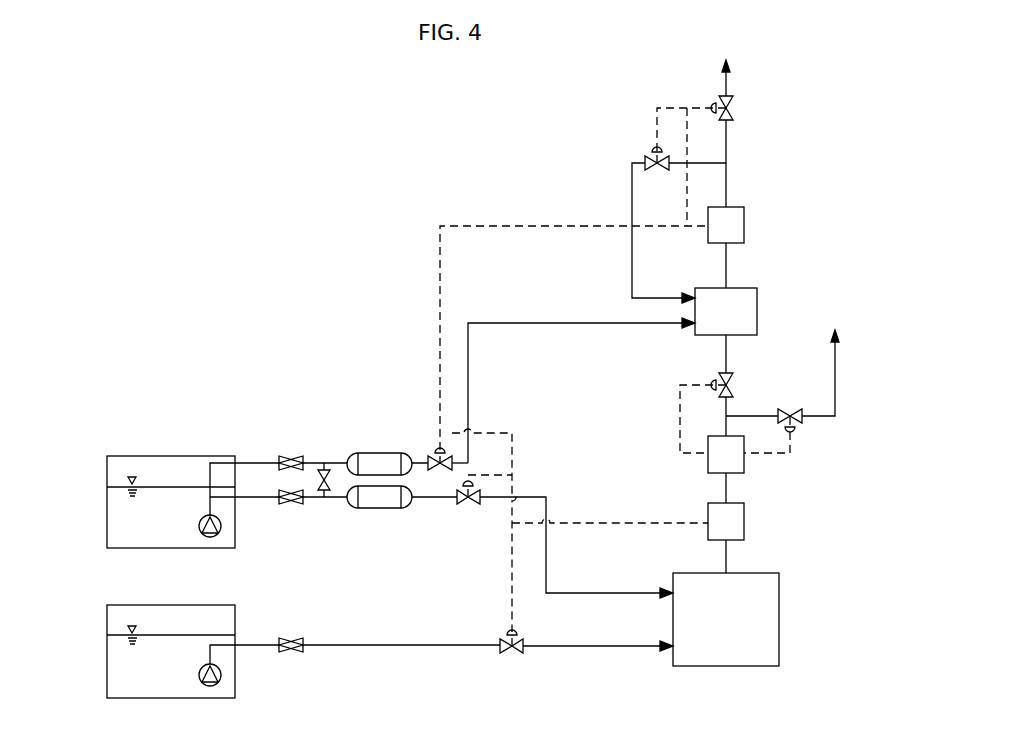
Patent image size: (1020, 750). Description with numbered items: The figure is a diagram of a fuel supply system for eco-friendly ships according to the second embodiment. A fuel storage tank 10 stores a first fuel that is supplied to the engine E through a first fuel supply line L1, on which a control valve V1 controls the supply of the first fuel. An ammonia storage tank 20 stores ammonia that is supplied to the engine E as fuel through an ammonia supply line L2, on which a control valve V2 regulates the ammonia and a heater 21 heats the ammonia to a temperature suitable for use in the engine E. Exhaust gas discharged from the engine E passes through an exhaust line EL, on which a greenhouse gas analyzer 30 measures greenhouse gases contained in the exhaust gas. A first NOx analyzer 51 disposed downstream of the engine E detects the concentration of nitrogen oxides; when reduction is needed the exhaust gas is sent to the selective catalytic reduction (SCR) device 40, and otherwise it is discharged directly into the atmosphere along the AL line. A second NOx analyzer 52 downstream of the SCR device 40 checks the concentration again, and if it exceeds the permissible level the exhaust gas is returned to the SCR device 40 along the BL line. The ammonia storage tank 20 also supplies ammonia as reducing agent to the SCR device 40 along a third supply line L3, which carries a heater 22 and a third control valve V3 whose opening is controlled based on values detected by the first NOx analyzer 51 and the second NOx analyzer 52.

The fuel storage tank 10 is at (107, 651).
The ammonia storage tank 20 is at (107, 501).
The heater 21 is at (380, 509).
The heater 22 is at (379, 452).
The greenhouse gas analyzer 30 is at (744, 522).
The selective catalytic reduction (SCR) device 40 is at (757, 313).
The first NOx analyzer 51 is at (745, 462).
The second NOx analyzer 52 is at (744, 225).
The control valve V1 is at (514, 654).
The control valve V2 is at (468, 506).
The third control valve V3 is at (436, 458).
The first fuel supply line L1 is at (590, 650).
The ammonia supply line L2 is at (547, 568).
The third supply line L3 is at (572, 325).
The engine E is at (726, 667).
The exhaust line EL is at (728, 184).
The BL line BL is at (632, 185).
The AL line AL is at (815, 418).